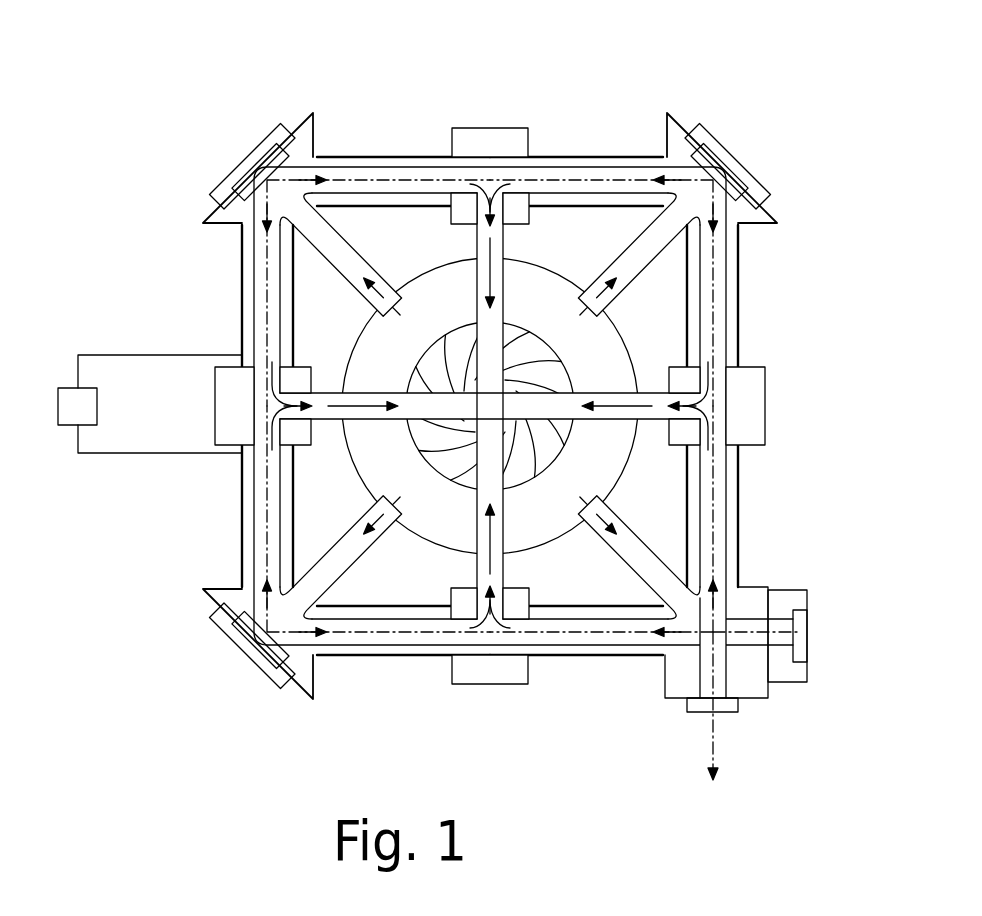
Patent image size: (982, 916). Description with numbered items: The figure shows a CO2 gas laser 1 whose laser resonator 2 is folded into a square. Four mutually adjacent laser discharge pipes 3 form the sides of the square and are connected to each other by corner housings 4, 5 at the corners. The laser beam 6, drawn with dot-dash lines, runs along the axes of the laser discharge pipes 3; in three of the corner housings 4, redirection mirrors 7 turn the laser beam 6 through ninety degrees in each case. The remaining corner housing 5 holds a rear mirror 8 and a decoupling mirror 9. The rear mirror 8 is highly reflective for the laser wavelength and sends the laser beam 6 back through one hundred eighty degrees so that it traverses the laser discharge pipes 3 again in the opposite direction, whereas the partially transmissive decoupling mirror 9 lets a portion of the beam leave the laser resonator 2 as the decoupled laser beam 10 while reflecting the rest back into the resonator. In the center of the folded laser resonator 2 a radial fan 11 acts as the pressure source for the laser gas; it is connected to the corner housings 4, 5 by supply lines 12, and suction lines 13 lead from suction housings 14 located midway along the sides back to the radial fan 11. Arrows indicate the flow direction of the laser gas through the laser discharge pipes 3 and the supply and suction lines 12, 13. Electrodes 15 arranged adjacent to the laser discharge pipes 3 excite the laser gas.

The CO2 gas laser 1 is at (157, 129).
The laser resonator 2 is at (132, 334).
The laser discharge pipes 3 is at (432, 160).
The corner housings 4 is at (202, 224).
The corner housing 5 is at (772, 695).
The laser beam 6 is at (714, 562).
The redirection mirrors 7 is at (247, 162).
The rear mirror 8 is at (800, 634).
The decoupling mirror 9 is at (733, 713).
The decoupled laser beam 10 is at (712, 748).
The radial fan 11 is at (535, 355).
The supply lines 12 is at (342, 230).
The suction lines 13 is at (549, 190).
The suction housings 14 is at (486, 128).
The electrodes 15 is at (404, 193).